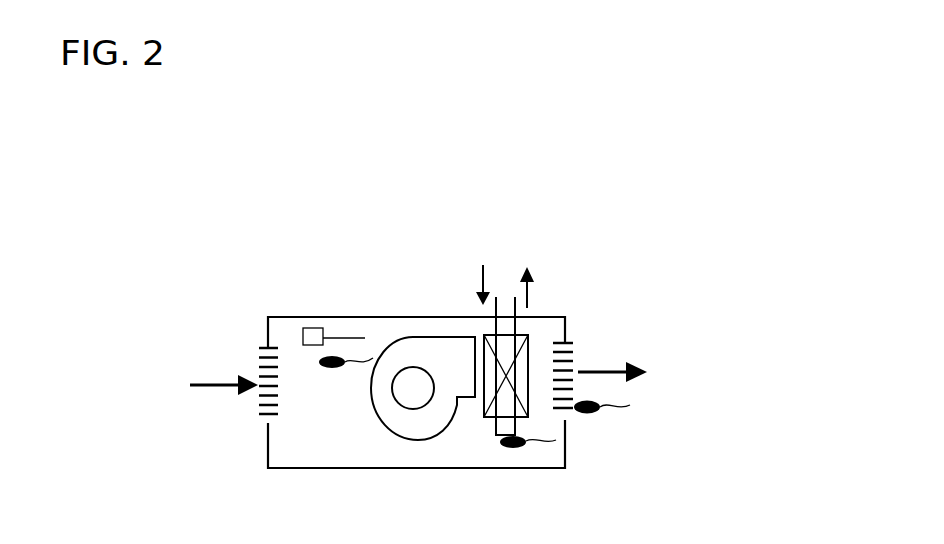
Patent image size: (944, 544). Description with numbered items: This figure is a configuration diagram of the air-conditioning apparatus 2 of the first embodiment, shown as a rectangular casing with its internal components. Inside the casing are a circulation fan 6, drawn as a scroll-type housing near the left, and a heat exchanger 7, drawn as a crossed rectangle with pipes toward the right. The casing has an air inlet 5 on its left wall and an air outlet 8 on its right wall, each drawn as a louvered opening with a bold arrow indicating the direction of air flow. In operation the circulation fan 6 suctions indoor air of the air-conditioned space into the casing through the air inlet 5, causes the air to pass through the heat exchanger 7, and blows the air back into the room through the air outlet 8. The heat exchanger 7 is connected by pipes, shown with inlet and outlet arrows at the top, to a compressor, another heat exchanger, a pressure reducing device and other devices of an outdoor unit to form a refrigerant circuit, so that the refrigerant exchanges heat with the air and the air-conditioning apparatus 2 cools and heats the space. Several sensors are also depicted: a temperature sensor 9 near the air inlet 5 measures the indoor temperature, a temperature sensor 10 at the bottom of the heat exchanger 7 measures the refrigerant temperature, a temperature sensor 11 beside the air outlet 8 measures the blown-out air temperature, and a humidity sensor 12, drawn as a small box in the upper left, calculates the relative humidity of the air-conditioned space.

The air-conditioning apparatus 2 is at (550, 225).
The air inlet 5 is at (259, 350).
The circulation fan 6 is at (412, 440).
The heat exchanger 7 is at (530, 343).
The air outlet 8 is at (575, 349).
The temperature sensor 9 is at (337, 356).
The temperature sensor 10 is at (513, 448).
The temperature sensor 11 is at (587, 414).
The humidity sensor 12 is at (313, 328).